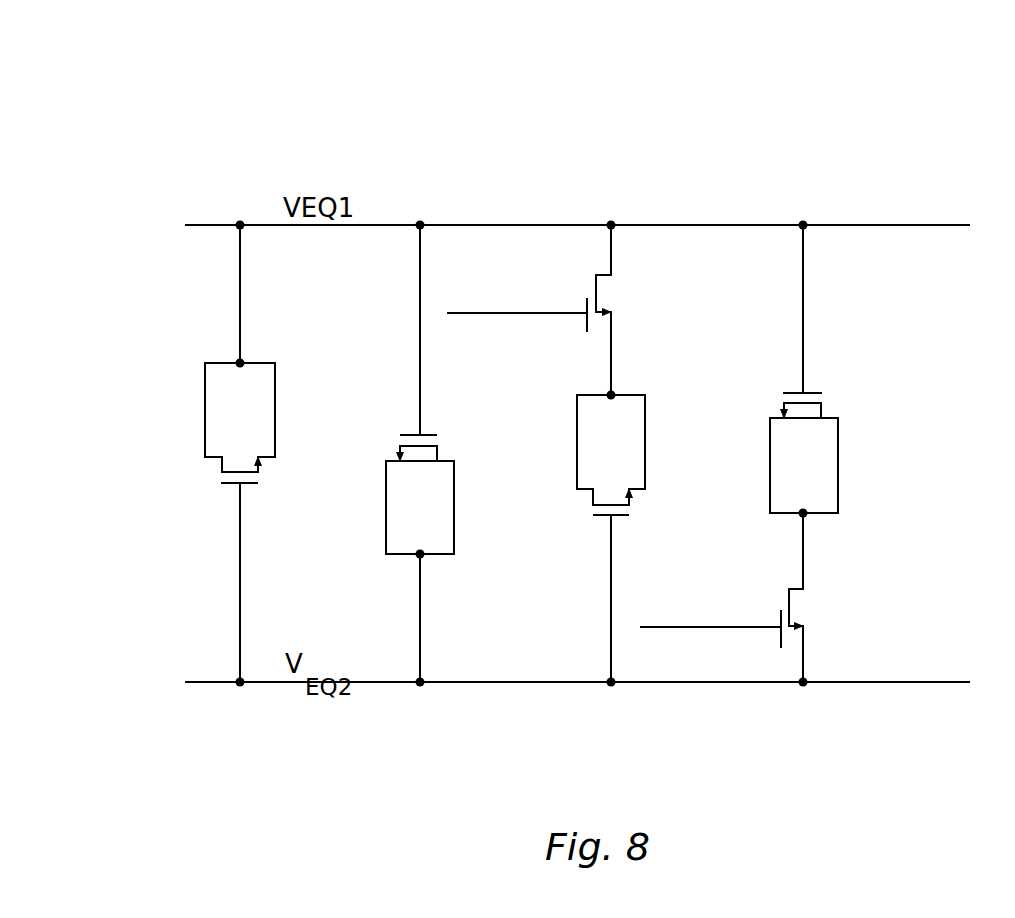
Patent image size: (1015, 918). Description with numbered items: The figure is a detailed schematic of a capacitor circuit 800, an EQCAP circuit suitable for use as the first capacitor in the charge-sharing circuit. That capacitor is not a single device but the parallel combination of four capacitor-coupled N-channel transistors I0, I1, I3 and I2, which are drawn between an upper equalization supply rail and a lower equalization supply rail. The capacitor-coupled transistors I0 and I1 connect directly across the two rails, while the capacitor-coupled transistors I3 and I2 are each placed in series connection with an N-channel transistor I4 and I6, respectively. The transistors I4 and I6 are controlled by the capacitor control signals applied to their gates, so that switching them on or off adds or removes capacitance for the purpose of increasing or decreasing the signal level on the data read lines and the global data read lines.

The capacitor circuit 800 is at (78, 118).
The capacitor-coupled N-channel transistor I0 is at (247, 453).
The capacitor-coupled N-channel transistor I1 is at (414, 453).
The capacitor-coupled N-channel transistor I2 is at (798, 371).
The capacitor-coupled N-channel transistor I3 is at (619, 537).
The N-channel transistor I4 is at (529, 310).
The N-channel transistor I6 is at (722, 597).